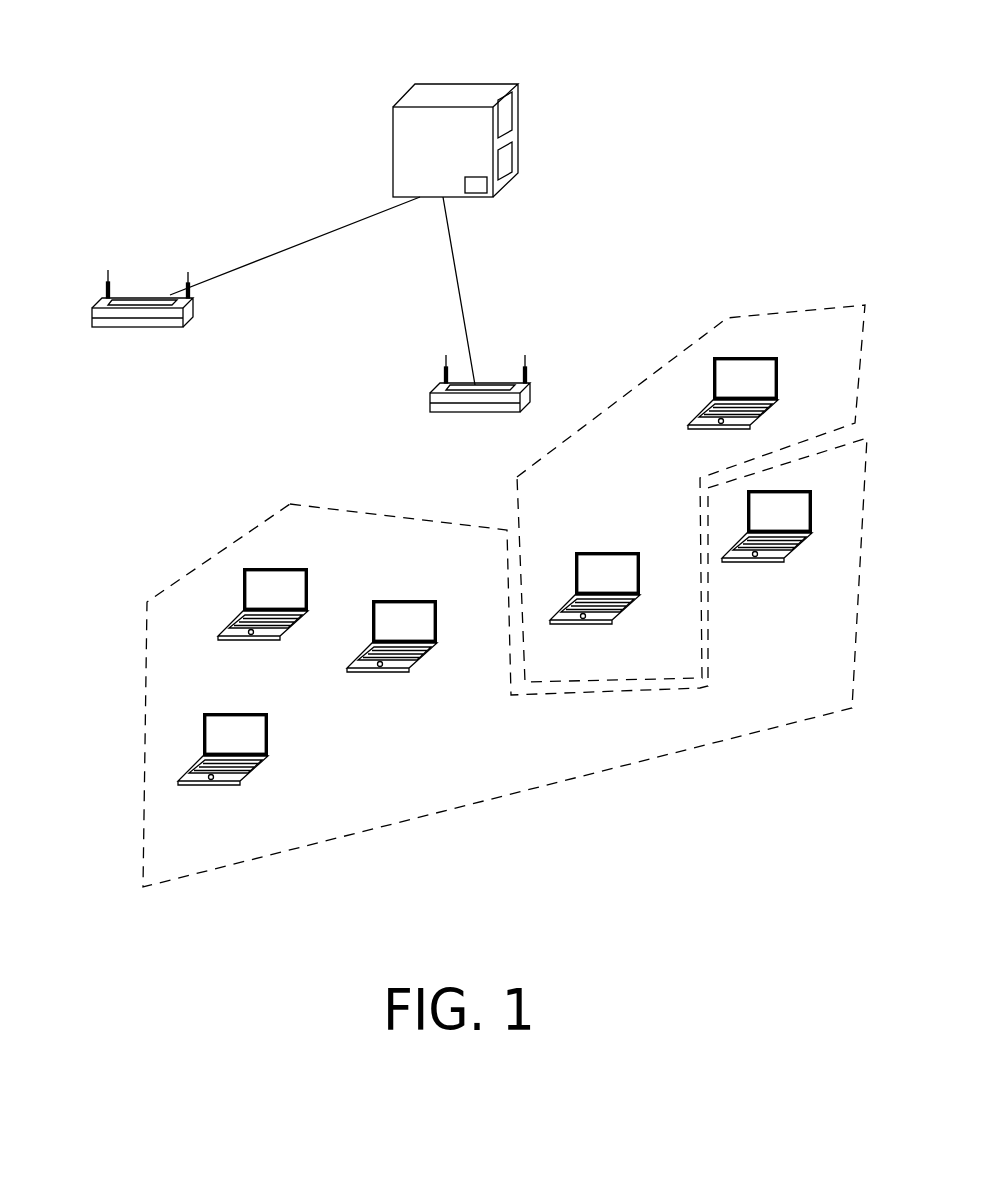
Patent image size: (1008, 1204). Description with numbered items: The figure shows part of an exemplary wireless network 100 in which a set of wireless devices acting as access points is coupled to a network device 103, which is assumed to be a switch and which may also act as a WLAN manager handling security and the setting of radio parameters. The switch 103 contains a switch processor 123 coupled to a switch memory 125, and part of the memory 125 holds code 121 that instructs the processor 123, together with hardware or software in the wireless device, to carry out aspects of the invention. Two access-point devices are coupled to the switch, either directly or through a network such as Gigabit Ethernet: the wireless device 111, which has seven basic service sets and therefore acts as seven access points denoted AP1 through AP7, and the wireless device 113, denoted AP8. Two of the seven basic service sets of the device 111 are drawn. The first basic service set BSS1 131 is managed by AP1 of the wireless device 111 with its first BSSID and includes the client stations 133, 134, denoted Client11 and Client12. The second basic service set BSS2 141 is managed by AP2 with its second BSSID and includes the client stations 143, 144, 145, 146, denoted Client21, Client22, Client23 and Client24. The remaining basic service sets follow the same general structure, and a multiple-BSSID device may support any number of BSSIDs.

The wireless network 100 is at (141, 944).
The network device 103 is at (393, 125).
The wireless device 111 is at (505, 412).
The wireless device 113 is at (163, 327).
The code 121 is at (473, 183).
The switch processor 123 is at (506, 119).
The switch memory 125 is at (509, 152).
The basic service set BSS1 131 is at (631, 456).
The client station 133 is at (623, 552).
The client station 134 is at (763, 357).
The basic service set BSS2 141 is at (458, 799).
The client station 143 is at (796, 490).
The client station 144 is at (292, 568).
The client station 145 is at (420, 600).
The client station 146 is at (250, 713).